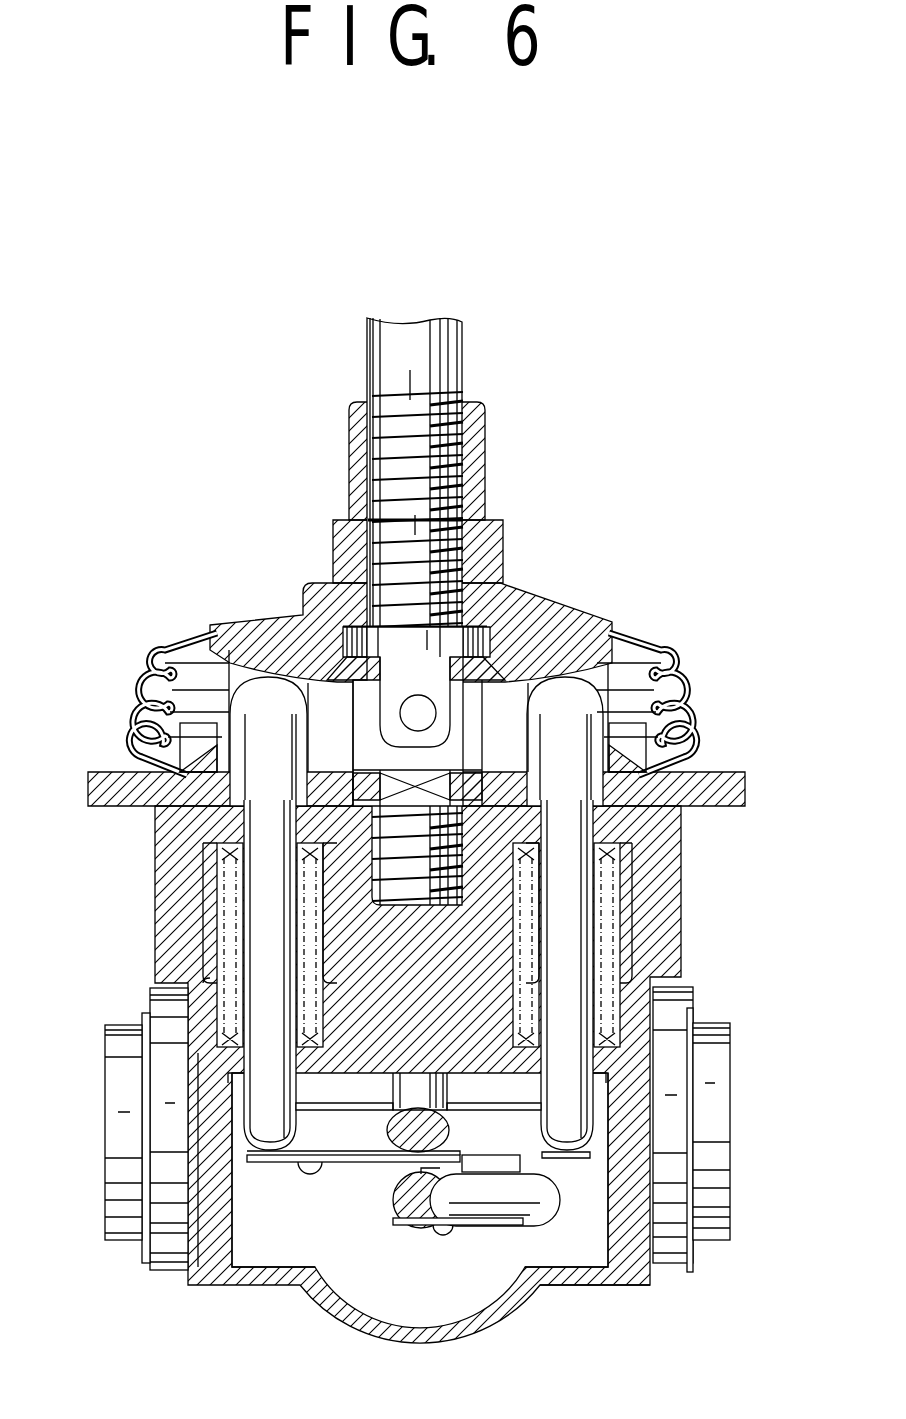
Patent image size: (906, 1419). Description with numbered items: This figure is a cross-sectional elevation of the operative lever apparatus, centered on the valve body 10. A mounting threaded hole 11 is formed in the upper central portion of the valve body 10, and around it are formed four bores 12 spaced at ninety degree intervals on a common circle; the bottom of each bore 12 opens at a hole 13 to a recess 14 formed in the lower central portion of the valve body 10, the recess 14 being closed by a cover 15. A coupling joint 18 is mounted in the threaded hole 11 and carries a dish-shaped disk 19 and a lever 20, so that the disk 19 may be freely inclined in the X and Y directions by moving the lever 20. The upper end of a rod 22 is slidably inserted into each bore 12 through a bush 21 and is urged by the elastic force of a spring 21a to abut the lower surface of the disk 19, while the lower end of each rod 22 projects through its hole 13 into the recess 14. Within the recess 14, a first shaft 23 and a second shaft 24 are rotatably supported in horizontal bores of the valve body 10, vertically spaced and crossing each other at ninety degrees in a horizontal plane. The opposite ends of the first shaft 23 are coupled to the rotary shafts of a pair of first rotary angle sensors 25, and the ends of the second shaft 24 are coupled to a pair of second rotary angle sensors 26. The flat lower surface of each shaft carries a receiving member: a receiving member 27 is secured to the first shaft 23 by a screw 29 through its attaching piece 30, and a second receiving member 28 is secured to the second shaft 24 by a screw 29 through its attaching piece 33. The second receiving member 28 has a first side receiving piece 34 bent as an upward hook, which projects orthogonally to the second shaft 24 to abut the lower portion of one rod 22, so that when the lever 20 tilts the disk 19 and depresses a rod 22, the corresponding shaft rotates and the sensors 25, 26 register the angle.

The valve body 10 is at (672, 983).
The mounting threaded hole 11 is at (460, 918).
The bores 12 is at (200, 940).
The hole 13 is at (318, 1065).
The recess 14 is at (232, 1240).
The cover 15 is at (640, 1284).
The coupling joint 18 is at (495, 728).
The dish-shaped disk 19 is at (505, 576).
The lever 20 is at (468, 374).
The bush 21 is at (200, 820).
The spring 21a is at (200, 862).
The rod 22 is at (412, 704).
The first shaft 23 is at (440, 1128).
The second shaft 24 is at (396, 1214).
The first rotary angle sensors 25 is at (740, 1196).
The second rotary angle sensors 26 is at (104, 1186).
The receiving member 27 is at (366, 1183).
The second receiving member 28 is at (410, 1228).
The screw 29 is at (312, 1174).
The attaching piece 30 is at (346, 1164).
The attaching piece 33 is at (470, 1228).
The first side receiving piece 34 is at (467, 1214).